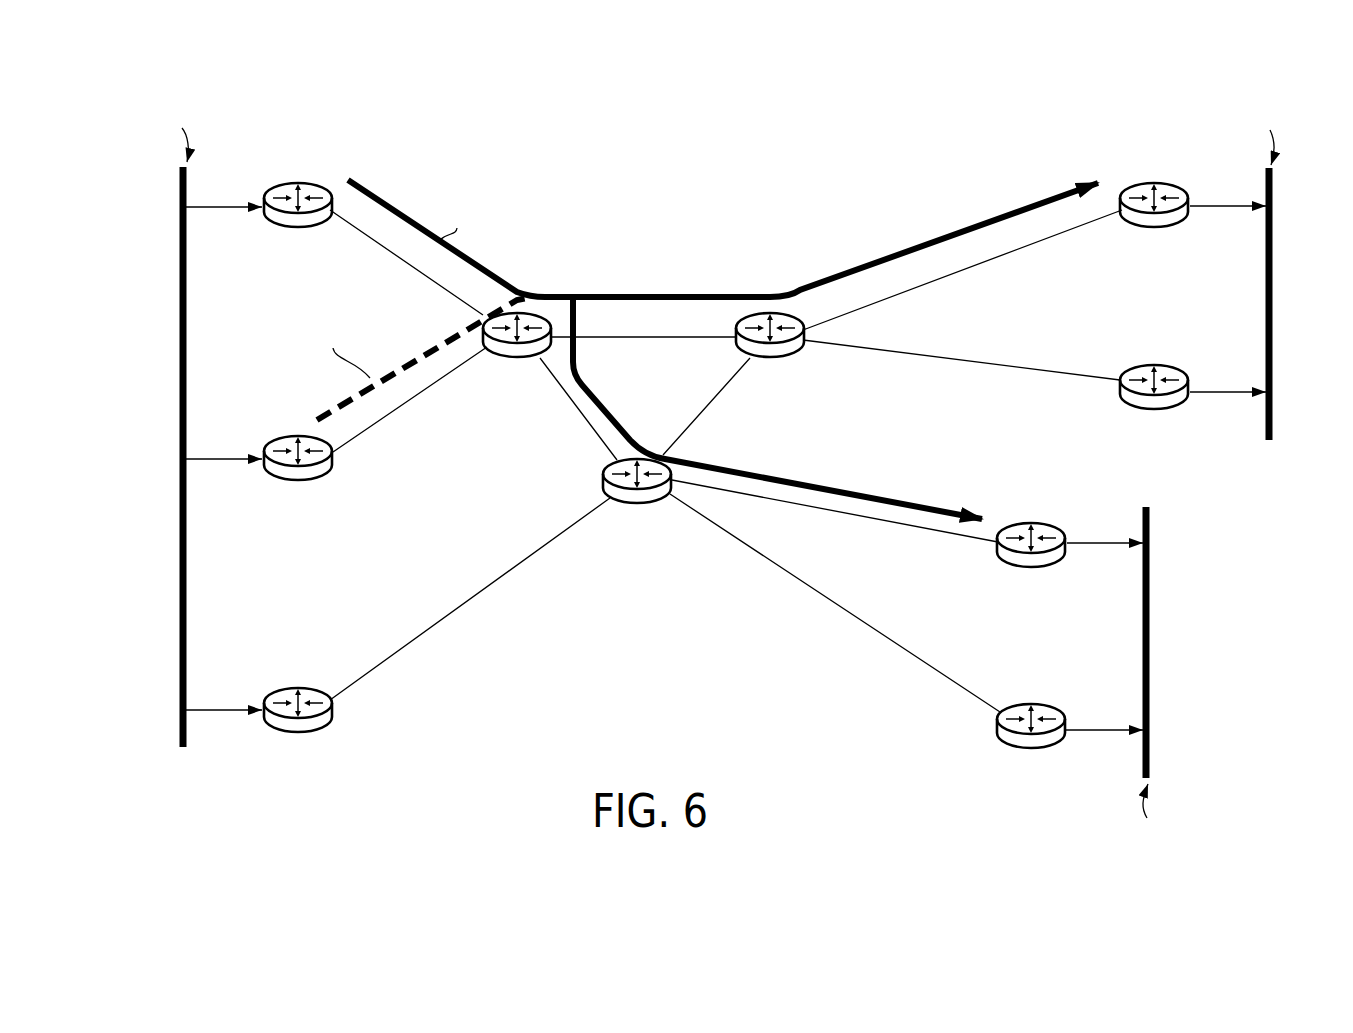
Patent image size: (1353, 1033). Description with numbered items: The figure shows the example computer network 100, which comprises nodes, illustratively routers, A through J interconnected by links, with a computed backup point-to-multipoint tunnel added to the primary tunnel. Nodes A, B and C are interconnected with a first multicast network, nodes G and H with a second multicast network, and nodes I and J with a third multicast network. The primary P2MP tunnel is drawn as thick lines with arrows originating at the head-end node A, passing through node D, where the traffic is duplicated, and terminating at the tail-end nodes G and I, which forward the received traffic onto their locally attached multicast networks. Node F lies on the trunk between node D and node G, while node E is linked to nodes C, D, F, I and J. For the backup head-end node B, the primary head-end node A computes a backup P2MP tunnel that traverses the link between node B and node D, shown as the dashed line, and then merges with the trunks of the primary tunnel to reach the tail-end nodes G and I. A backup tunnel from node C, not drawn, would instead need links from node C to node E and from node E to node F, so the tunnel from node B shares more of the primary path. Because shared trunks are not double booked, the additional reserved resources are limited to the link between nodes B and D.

The computer network 100 is at (938, 70).
The node A is at (274, 190).
The node B is at (274, 444).
The node C is at (274, 694).
The node D is at (508, 363).
The node E is at (603, 478).
The node F is at (788, 363).
The node G is at (1167, 232).
The node H is at (1168, 414).
The node I is at (1044, 570).
The node J is at (1042, 752).